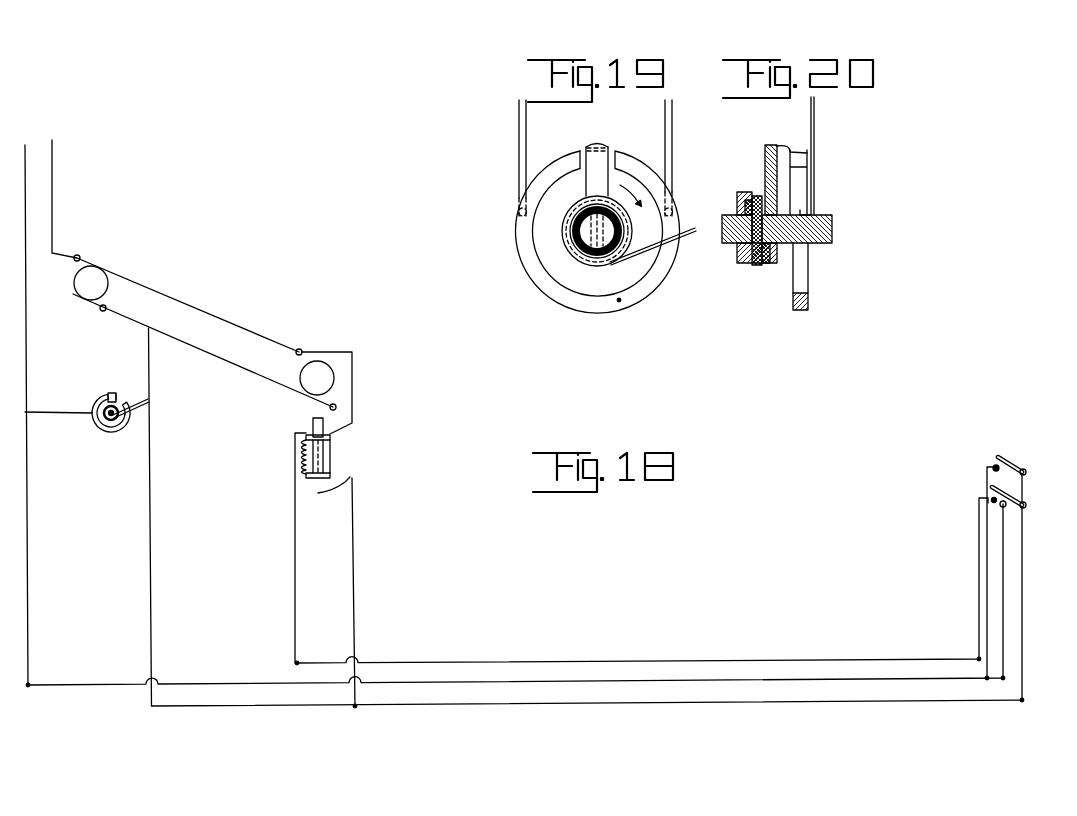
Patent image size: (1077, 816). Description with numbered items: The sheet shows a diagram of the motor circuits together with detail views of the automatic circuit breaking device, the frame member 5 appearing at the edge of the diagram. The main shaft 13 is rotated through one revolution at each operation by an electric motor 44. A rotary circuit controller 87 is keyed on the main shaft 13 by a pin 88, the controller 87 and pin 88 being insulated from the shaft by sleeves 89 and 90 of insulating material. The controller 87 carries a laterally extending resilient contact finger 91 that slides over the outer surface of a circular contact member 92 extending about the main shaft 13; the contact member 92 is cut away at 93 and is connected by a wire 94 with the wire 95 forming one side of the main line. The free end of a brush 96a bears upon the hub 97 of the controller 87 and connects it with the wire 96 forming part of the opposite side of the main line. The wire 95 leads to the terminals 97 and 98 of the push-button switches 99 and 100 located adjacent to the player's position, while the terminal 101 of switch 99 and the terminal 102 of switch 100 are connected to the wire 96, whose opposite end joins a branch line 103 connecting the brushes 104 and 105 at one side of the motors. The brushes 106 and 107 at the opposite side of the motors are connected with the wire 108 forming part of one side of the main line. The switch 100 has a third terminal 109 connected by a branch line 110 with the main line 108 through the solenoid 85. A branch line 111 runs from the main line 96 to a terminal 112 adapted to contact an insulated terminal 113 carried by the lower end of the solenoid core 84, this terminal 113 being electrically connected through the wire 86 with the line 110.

In FIG. 18, the frame member 5 is at (26, 363).
In FIG. 19, the main shaft 13 is at (583, 242).
In FIG. 20, the main shaft 13 is at (822, 228).
In FIG. 18, the electric motor 44 is at (95, 281).
In FIG. 18, the solenoid core 84 is at (313, 423).
In FIG. 18, the solenoid 85 is at (331, 455).
In FIG. 18, the wire 86 is at (302, 456).
In FIG. 18, the rotary circuit controller 87 is at (115, 392).
In FIG. 19, the rotary circuit controller 87 is at (600, 165).
In FIG. 20, the rotary circuit controller 87 is at (765, 161).
In FIG. 20, the pin 88 is at (757, 265).
In FIG. 20, the sleeve 89 is at (738, 210).
In FIG. 20, the sleeve 90 is at (745, 238).
In FIG. 19, the resilient contact finger 91 is at (597, 144).
In FIG. 20, the resilient contact finger 91 is at (787, 147).
In FIG. 18, the circular contact member 92 is at (103, 432).
In FIG. 19, the circular contact member 92 is at (619, 300).
In FIG. 20, the circular contact member 92 is at (810, 300).
In FIG. 18, the cut-away portion 93 is at (107, 397).
In FIG. 19, the cut-away portion 93 is at (581, 155).
In FIG. 20, the cut-away portion 93 is at (800, 158).
In FIG. 18, the wire 94 is at (55, 415).
In FIG. 18, the wire 95 is at (740, 683).
In FIG. 18, the wire 96 is at (150, 495).
In FIG. 18, the brush 96a is at (137, 430).
In FIG. 19, the brush 96a is at (687, 237).
In FIG. 18, the hub 97 is at (993, 465).
In FIG. 19, the hub 97 is at (590, 255).
In FIG. 20, the hub 97 is at (771, 264).
In FIG. 18, the terminal 98 is at (1006, 506).
In FIG. 18, the switch 99 is at (1008, 460).
In FIG. 18, the switch 100 is at (998, 488).
In FIG. 18, the terminal 101 is at (1026, 470).
In FIG. 18, the terminal 102 is at (1026, 507).
In FIG. 18, the branch line 103 is at (218, 368).
In FIG. 18, the brush 104 is at (106, 308).
In FIG. 18, the brush 105 is at (336, 406).
In FIG. 18, the brush 106 is at (79, 256).
In FIG. 18, the brush 107 is at (301, 350).
In FIG. 18, the wire 108 is at (52, 190).
In FIG. 18, the third terminal 109 is at (992, 502).
In FIG. 18, the branch line 110 is at (353, 356).
In FIG. 18, the branch line 111 is at (354, 575).
In FIG. 18, the terminal 112 is at (331, 497).
In FIG. 18, the insulated terminal 113 is at (312, 479).